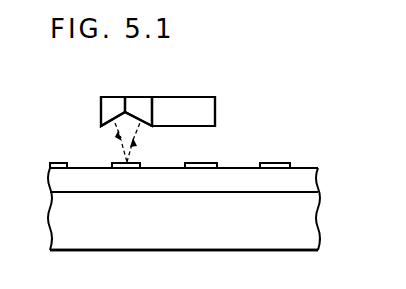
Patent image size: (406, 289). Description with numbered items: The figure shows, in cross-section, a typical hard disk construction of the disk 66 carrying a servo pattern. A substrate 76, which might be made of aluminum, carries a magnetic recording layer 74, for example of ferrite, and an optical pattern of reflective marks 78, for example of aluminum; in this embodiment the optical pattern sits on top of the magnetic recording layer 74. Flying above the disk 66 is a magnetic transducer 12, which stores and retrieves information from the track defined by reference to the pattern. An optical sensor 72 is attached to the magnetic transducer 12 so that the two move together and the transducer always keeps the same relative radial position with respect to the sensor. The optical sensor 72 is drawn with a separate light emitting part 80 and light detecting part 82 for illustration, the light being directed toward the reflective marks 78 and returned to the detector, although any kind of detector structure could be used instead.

The magnetic transducer 12 is at (200, 103).
The disk 66 is at (364, 202).
The optical sensor 72 is at (82, 107).
The magnetic recording layer 74 is at (315, 178).
The substrate 76 is at (302, 233).
The reflective marks 78 is at (116, 161).
The light emitting part 80 is at (117, 103).
The light detecting part 82 is at (130, 104).